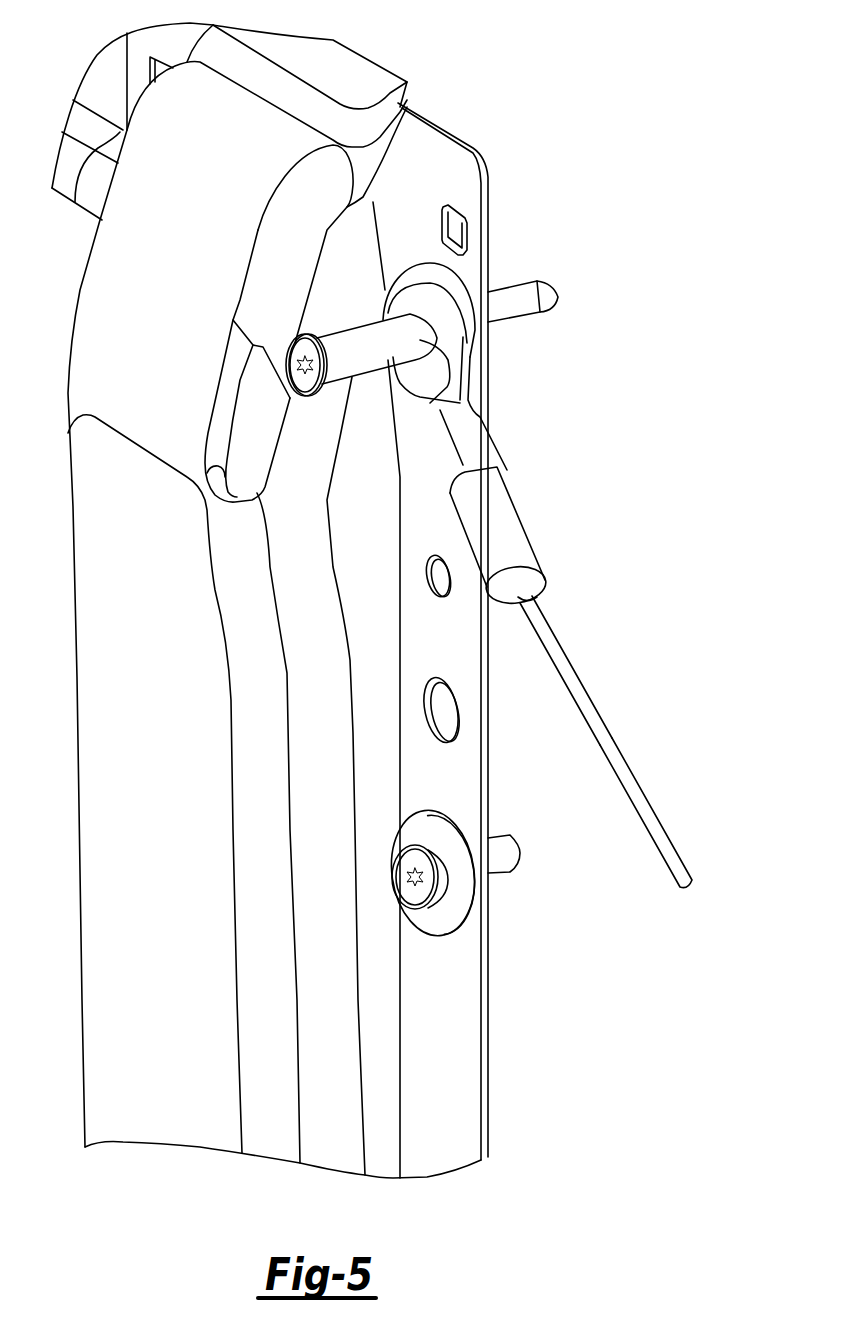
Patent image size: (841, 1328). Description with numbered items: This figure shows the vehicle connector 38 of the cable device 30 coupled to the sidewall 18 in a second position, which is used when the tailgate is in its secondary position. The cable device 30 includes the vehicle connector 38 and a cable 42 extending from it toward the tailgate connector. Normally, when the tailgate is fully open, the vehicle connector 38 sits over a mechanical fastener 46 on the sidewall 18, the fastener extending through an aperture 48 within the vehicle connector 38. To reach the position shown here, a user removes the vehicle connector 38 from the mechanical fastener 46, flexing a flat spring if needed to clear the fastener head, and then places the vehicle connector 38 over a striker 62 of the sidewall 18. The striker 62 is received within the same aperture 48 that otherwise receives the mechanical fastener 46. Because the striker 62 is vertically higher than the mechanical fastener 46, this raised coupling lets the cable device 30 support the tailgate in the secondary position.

The sidewall 18 is at (440, 183).
The cable device 30 is at (613, 753).
The vehicle connector 38 is at (500, 503).
The cable 42 is at (563, 658).
The mechanical fastener 46 is at (400, 883).
The aperture 48 is at (450, 372).
The striker 62 is at (380, 347).